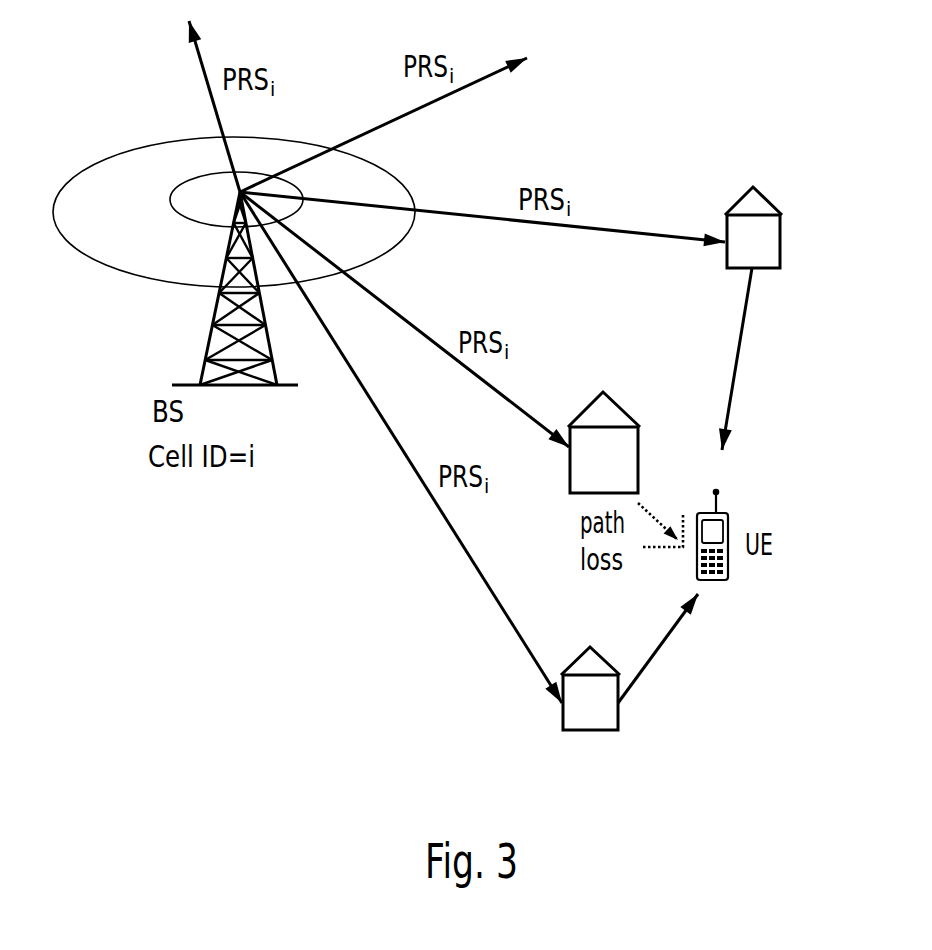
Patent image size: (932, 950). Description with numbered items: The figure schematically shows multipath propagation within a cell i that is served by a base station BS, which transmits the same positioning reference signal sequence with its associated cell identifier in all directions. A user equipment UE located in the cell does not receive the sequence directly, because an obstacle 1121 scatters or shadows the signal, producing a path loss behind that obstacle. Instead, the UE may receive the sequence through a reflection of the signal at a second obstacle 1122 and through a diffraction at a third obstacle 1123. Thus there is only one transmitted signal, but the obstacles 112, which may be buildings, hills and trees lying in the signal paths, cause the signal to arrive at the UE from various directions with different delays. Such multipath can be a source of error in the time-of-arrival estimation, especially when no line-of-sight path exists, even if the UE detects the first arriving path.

The obstacle 112 is at (708, 500).
The obstacle 1121 is at (610, 440).
The obstacle 1122 is at (753, 241).
The obstacle 1123 is at (591, 703).